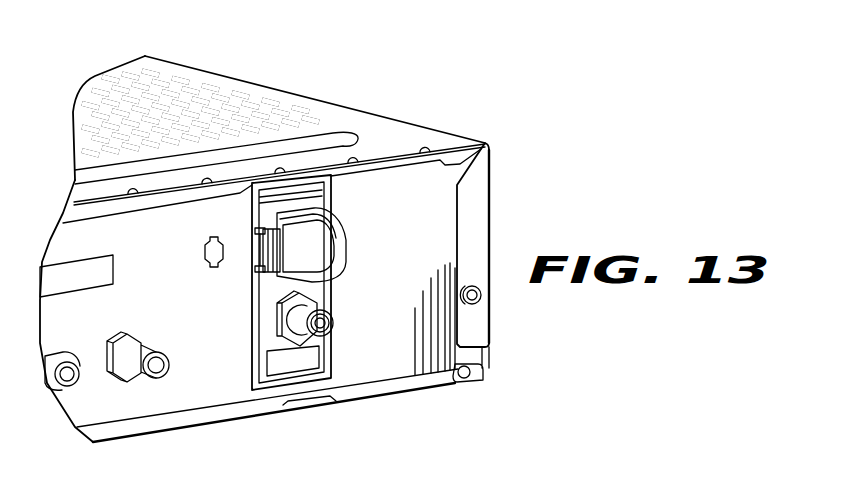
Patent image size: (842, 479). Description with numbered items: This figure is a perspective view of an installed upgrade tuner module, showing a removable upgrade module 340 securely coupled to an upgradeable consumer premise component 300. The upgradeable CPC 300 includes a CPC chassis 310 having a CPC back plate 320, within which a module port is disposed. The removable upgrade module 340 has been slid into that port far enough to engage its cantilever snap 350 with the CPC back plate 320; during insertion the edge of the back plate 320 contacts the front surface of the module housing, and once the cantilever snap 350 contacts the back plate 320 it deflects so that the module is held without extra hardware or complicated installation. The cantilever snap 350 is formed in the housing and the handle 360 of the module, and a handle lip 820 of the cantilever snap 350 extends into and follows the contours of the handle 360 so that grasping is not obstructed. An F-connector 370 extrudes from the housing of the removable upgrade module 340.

The upgradeable consumer premise component 300 is at (574, 331).
The CPC chassis 310 is at (345, 94).
The CPC back plate 320 is at (182, 281).
The removable upgrade module 340 is at (266, 361).
The cantilever snap 350 is at (260, 242).
The handle 360 is at (347, 249).
The F-connector 370 is at (329, 323).
The handle lip 820 is at (261, 258).